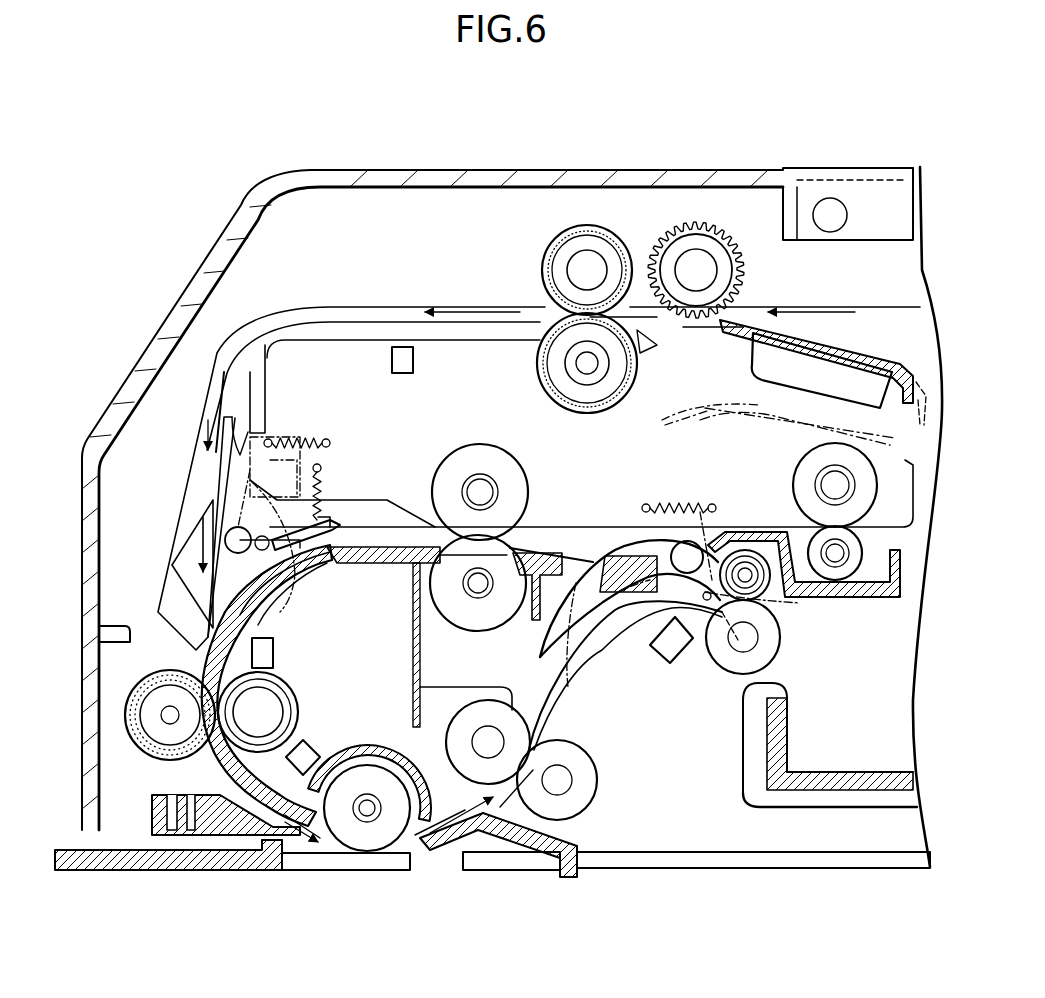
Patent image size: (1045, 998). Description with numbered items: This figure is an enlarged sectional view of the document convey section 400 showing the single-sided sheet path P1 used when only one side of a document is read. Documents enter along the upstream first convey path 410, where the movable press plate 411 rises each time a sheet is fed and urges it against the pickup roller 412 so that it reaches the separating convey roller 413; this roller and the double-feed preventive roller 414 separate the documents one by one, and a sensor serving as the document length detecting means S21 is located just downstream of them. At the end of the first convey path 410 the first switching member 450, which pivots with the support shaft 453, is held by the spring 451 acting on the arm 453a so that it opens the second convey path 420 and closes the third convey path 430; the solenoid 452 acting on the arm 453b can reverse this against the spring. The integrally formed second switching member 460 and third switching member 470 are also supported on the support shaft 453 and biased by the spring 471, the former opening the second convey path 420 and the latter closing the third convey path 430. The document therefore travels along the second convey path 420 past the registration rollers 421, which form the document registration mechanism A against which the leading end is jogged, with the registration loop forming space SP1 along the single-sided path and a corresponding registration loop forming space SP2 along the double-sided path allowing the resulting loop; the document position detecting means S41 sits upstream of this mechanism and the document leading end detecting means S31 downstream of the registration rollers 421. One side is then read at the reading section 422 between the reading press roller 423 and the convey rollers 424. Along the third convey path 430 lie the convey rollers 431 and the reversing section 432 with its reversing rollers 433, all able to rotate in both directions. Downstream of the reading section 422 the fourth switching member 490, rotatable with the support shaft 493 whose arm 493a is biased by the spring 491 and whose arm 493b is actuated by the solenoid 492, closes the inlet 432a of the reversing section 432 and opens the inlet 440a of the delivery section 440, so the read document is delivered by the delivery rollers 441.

The document convey section 400 is at (197, 338).
The first convey path 410 is at (305, 310).
The movable press plate 411 is at (862, 356).
The pickup roller 412 is at (742, 273).
The separating convey roller 413 is at (545, 252).
The double-feed preventive roller 414 is at (540, 380).
The second convey path 420 is at (215, 668).
The registration rollers 421 is at (148, 768).
The reading section 422 is at (322, 886).
The reading press roller 423 is at (380, 860).
The convey rollers 424 is at (597, 798).
The third convey path 430 is at (420, 514).
The convey rollers 431 is at (525, 468).
The reversing section 432 is at (880, 448).
The inlet of the reversing section 432a is at (752, 536).
The reversing rollers 433 is at (768, 447).
The delivery section 440 is at (795, 686).
The inlet of the delivery section 440a is at (722, 632).
The delivery rollers 441 is at (787, 637).
The first switching member 450 is at (225, 463).
The spring 451 is at (305, 440).
The solenoid 452 is at (322, 447).
The support shaft 453 is at (215, 532).
The arm 453a is at (222, 392).
The arm 453b is at (278, 612).
The second switching member 460 is at (213, 583).
The third switching member 470 is at (303, 594).
The spring 471 is at (326, 492).
The fourth switching member 490 is at (610, 553).
The spring 491 is at (655, 504).
The solenoid 492 is at (650, 655).
The support shaft 493 is at (612, 550).
The arm 493a is at (792, 462).
The arm 493b is at (770, 600).
The document length detecting means S21 is at (400, 345).
The document leading end detecting means S31 is at (316, 754).
The document position detecting means S41 is at (276, 652).
The registration loop forming space SP1 is at (198, 545).
The registration loop forming space SP2 is at (436, 584).
The single-sided sheet path P1 is at (452, 860).
The document registration mechanism A is at (122, 757).